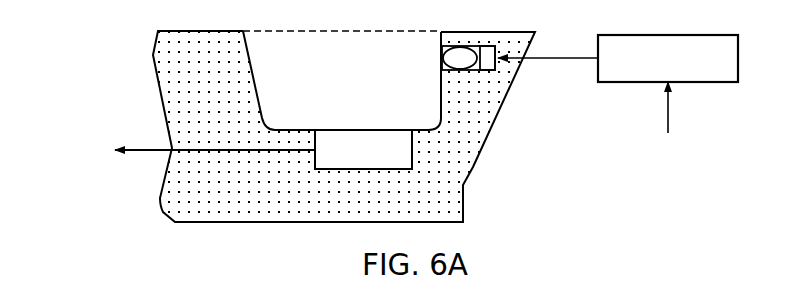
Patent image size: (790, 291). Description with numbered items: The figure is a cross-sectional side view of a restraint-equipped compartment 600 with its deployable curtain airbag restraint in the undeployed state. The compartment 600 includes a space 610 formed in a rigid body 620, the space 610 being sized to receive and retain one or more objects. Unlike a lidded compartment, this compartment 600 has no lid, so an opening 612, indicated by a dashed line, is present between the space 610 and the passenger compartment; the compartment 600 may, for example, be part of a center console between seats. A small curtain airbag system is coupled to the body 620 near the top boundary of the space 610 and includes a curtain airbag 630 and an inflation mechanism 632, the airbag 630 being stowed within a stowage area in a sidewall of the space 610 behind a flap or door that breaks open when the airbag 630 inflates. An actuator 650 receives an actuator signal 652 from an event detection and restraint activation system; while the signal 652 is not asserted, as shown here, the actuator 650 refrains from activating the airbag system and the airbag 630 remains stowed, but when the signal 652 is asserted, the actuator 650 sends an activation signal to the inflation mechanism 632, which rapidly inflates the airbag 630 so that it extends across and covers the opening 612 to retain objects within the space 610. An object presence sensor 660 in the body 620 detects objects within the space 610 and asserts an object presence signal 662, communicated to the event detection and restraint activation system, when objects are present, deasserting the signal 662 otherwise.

The restraint-equipped compartment 600 is at (394, 126).
The space 610 is at (290, 95).
The opening 612 is at (265, 33).
The rigid body 620 is at (473, 163).
The curtain airbag 630 is at (462, 63).
The inflation mechanism 632 is at (488, 63).
The actuator 650 is at (708, 82).
The actuator signal 652 is at (668, 115).
The object presence sensor 660 is at (363, 130).
The object presence signal 662 is at (150, 149).